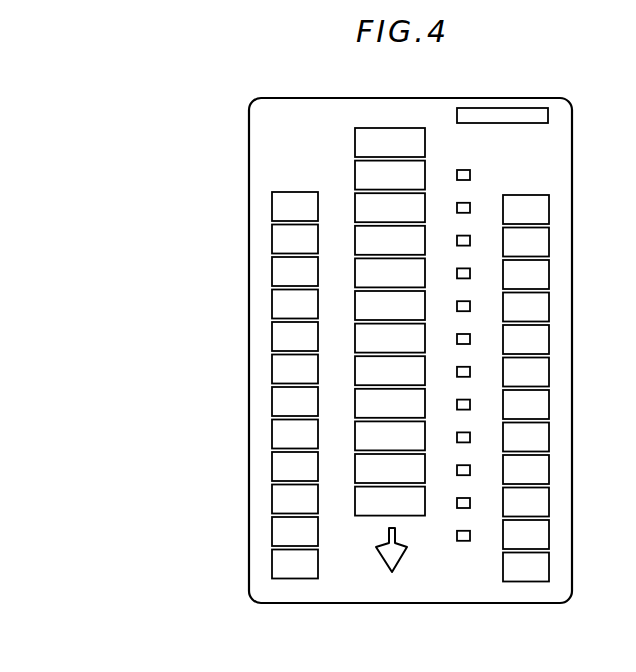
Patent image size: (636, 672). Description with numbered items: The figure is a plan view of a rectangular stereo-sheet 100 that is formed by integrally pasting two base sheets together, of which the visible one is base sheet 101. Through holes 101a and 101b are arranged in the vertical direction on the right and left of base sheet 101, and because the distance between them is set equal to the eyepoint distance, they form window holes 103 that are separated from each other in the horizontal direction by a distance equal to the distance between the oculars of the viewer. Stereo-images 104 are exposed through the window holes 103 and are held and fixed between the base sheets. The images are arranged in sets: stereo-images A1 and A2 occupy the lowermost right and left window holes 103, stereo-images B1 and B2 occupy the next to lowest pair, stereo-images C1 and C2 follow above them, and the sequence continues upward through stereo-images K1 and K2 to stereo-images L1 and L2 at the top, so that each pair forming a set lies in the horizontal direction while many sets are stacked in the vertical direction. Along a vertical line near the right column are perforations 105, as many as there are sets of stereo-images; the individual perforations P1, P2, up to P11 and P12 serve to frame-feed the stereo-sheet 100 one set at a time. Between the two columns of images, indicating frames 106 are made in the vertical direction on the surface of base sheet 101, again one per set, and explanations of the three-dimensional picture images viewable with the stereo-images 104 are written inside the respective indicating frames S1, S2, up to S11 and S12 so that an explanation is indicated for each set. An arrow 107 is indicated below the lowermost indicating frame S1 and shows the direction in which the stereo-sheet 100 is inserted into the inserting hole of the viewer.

The stereo-sheet 100 is at (330, 605).
The base sheet 101 is at (290, 592).
The through hole 101a is at (538, 350).
The through hole 101b is at (275, 348).
The window hole 103 is at (285, 320).
The stereo-image 104 is at (290, 335).
The perforations 105 is at (457, 500).
The indicating frames 106 is at (355, 173).
The arrow 107 is at (392, 572).
The stereo-image L2 is at (280, 208).
The stereo-image K2 is at (285, 240).
The stereo-image C2 is at (278, 505).
The stereo-image B2 is at (278, 535).
The stereo-image A2 is at (283, 568).
The stereo-image L1 is at (534, 208).
The stereo-image K1 is at (540, 242).
The stereo-image C1 is at (538, 504).
The stereo-image B1 is at (538, 536).
The stereo-image A1 is at (540, 568).
The indicating frame S12 is at (377, 128).
The indicating frame S11 is at (425, 173).
The indicating frame S2 is at (355, 470).
The indicating frame S1 is at (365, 515).
The perforation P12 is at (465, 170).
The perforation P11 is at (470, 207).
The perforation P2 is at (470, 500).
The perforation P1 is at (465, 537).